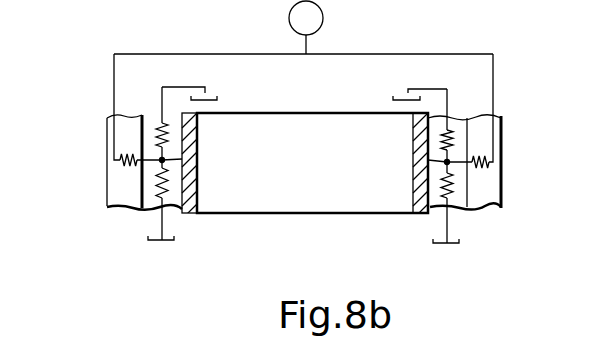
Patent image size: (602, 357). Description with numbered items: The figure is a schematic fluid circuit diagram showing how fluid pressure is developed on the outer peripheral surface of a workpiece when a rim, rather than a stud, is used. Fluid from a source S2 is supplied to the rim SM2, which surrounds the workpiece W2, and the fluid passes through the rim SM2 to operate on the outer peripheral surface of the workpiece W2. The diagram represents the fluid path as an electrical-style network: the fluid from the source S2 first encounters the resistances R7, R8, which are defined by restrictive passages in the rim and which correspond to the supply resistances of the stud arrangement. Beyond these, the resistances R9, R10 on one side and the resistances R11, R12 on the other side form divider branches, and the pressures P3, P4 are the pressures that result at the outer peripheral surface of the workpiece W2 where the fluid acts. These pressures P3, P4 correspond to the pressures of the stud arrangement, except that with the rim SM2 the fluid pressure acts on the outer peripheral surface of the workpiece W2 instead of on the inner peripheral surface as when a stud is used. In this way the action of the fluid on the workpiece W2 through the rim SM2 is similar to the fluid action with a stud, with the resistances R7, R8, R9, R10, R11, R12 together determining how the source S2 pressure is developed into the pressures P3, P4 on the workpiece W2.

The source S2 is at (323, 21).
The rim SM2 is at (501, 135).
The workpiece W2 is at (305, 214).
The pressure P3 is at (428, 160).
The pressure P4 is at (197, 158).
The resistance R7 is at (121, 166).
The resistance R8 is at (490, 170).
The resistance R9 is at (440, 124).
The resistance R10 is at (440, 178).
The resistance R11 is at (170, 134).
The resistance R12 is at (172, 178).